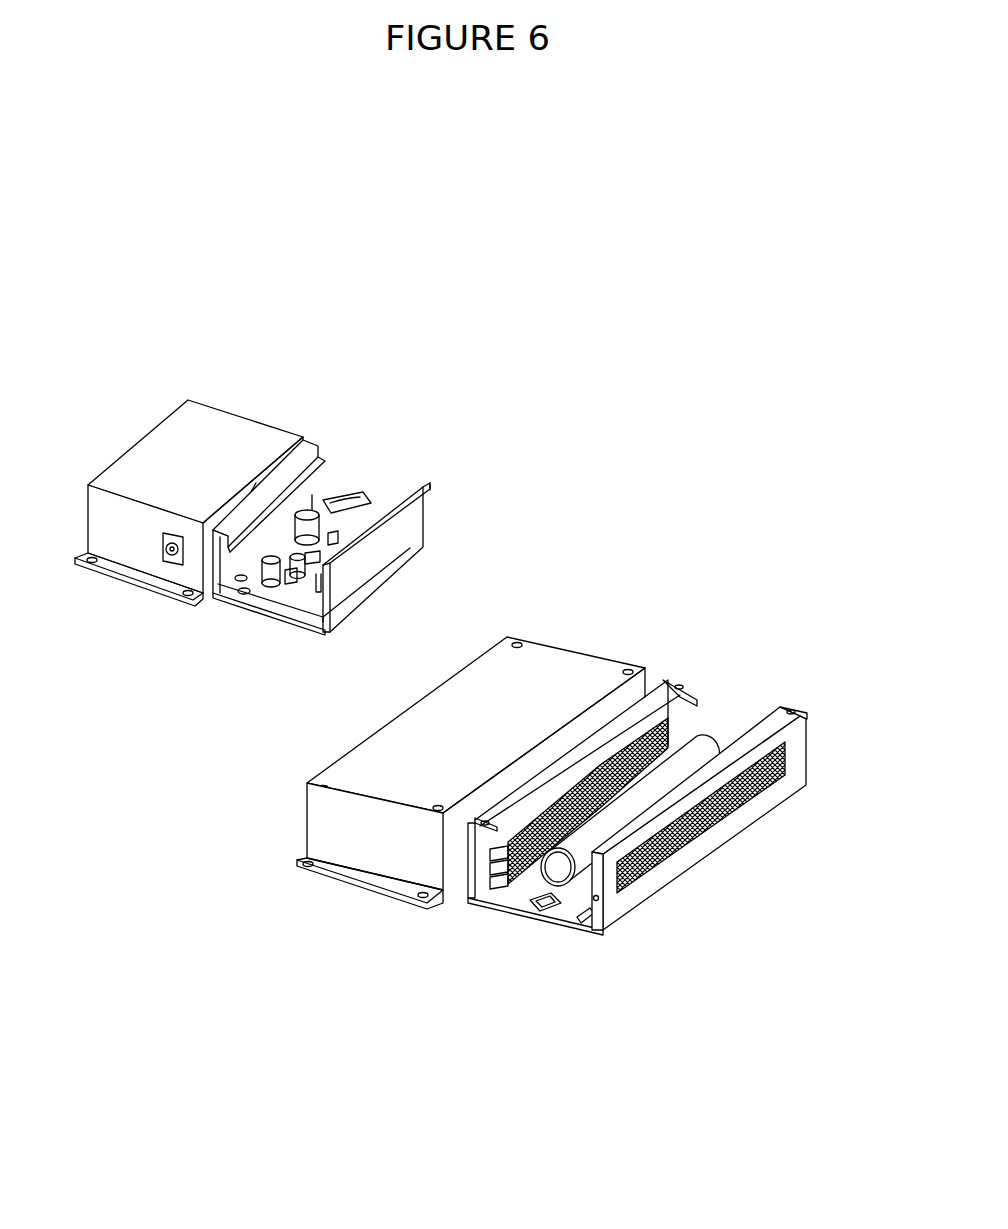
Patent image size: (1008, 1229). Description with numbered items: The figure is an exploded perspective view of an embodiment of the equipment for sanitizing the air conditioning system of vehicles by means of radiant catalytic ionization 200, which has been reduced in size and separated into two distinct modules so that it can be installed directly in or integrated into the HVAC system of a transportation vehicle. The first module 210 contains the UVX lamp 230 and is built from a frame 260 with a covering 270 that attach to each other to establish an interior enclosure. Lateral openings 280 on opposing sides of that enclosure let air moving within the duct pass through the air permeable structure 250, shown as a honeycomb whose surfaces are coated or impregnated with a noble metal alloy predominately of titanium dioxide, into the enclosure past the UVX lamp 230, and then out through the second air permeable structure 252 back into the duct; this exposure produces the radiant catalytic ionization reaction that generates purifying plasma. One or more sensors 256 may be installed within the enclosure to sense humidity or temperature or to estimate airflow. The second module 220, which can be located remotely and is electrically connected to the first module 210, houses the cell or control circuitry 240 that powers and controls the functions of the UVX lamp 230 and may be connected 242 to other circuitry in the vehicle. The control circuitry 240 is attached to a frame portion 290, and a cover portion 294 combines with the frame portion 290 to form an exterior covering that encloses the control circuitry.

The equipment for sanitizing the air conditioning system of vehicles by means of rad 200 is at (697, 462).
The first module 210 is at (450, 700).
The second module 220 is at (152, 447).
The UVX lamp 230 is at (700, 752).
The control circuitry 240 is at (358, 473).
The connection 242 is at (172, 552).
The air permeable structure 250 is at (522, 887).
The second air permeable structure 252 is at (595, 902).
The sensors 256 is at (542, 907).
The frame 260 is at (770, 727).
The covering 270 is at (553, 667).
The lateral openings 280 is at (700, 833).
The frame portion 290 is at (407, 494).
The cover portion 294 is at (230, 425).